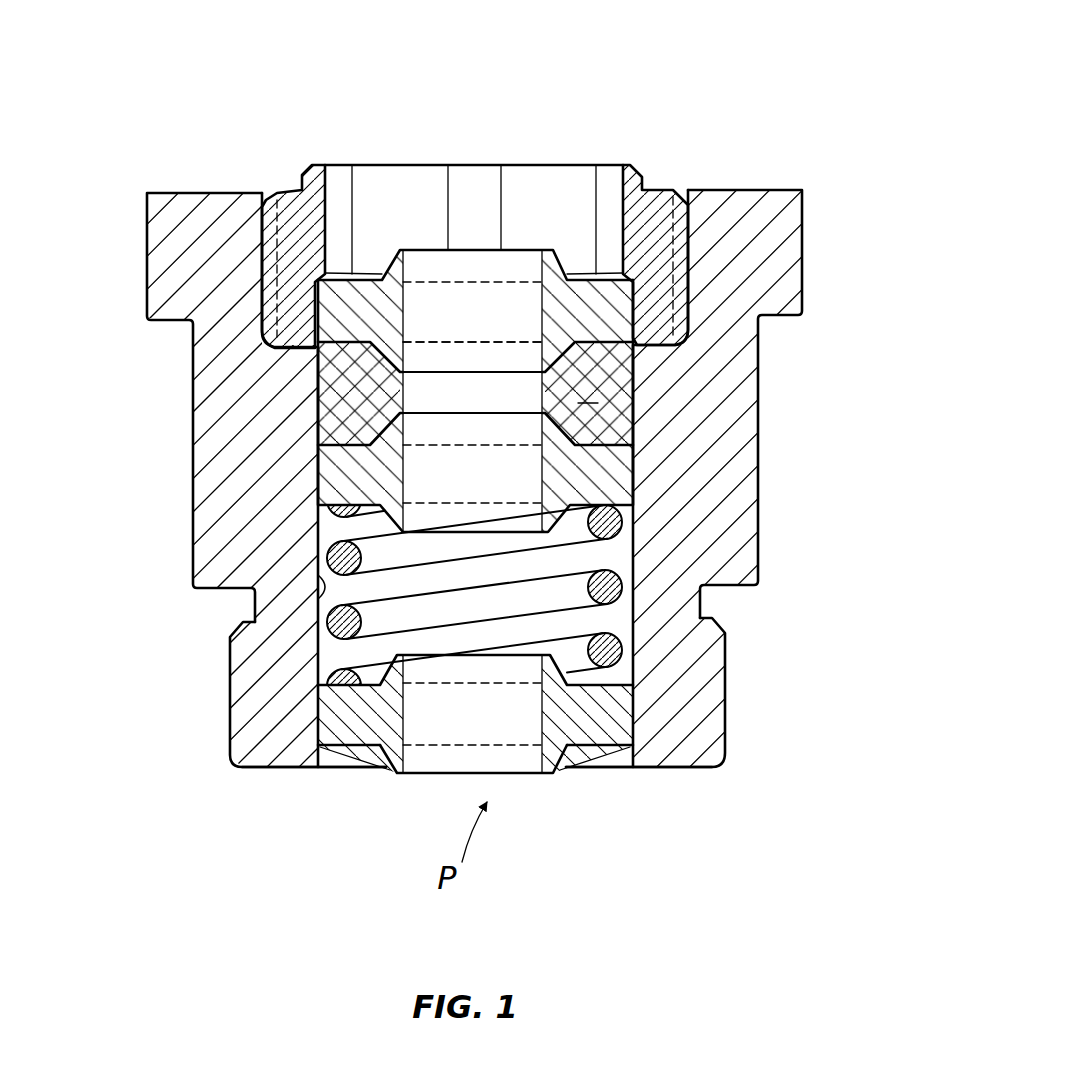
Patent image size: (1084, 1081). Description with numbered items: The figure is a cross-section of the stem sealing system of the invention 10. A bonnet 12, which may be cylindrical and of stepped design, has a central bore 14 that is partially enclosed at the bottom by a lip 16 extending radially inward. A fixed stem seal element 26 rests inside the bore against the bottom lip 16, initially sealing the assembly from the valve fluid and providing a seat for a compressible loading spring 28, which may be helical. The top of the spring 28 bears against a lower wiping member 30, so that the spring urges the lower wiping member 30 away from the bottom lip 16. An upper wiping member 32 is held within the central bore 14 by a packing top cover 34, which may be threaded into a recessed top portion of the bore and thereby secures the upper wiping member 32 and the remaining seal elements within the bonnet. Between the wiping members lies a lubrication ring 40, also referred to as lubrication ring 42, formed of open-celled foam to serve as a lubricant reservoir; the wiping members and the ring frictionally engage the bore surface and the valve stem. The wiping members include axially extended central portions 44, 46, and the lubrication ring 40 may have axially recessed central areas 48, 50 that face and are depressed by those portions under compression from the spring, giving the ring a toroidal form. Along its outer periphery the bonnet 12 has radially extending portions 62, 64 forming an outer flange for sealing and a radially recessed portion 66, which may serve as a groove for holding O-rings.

The invention 10 is at (542, 423).
The bonnet 12 is at (542, 497).
The central bore 14 is at (587, 656).
The lip 16 is at (563, 775).
The fixed stem seal element 26 is at (622, 712).
The loading spring 28 is at (606, 508).
The lower wiping member 30 is at (622, 470).
The upper wiping member 32 is at (400, 252).
The packing top cover 34 is at (501, 214).
The lubrication ring 40 is at (333, 390).
The lubrication ring 42 is at (317, 590).
The axially extended central portion 44 is at (365, 391).
The axially extended central portion 46 is at (515, 458).
The axially recessed central area 48 is at (428, 424).
The axially recessed central area 50 is at (512, 362).
The radially extending portion 62 is at (147, 234).
The radially extending portion 64 is at (232, 722).
The radially recessed portion 66 is at (708, 605).